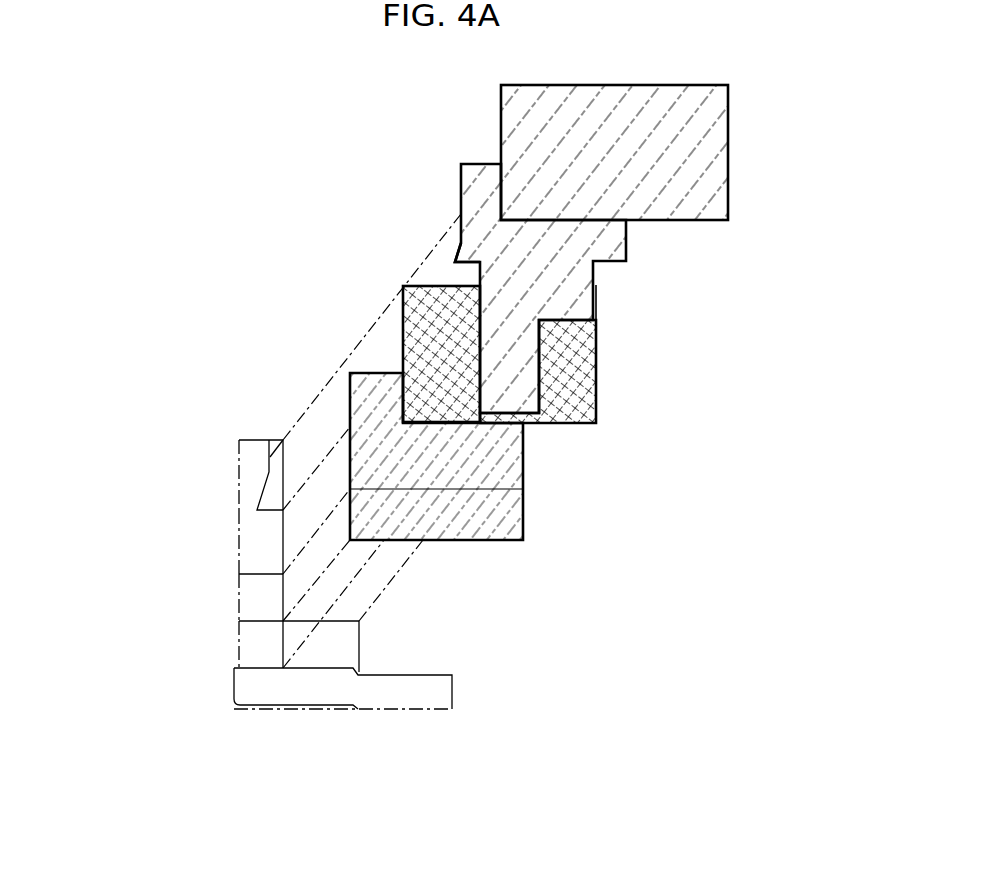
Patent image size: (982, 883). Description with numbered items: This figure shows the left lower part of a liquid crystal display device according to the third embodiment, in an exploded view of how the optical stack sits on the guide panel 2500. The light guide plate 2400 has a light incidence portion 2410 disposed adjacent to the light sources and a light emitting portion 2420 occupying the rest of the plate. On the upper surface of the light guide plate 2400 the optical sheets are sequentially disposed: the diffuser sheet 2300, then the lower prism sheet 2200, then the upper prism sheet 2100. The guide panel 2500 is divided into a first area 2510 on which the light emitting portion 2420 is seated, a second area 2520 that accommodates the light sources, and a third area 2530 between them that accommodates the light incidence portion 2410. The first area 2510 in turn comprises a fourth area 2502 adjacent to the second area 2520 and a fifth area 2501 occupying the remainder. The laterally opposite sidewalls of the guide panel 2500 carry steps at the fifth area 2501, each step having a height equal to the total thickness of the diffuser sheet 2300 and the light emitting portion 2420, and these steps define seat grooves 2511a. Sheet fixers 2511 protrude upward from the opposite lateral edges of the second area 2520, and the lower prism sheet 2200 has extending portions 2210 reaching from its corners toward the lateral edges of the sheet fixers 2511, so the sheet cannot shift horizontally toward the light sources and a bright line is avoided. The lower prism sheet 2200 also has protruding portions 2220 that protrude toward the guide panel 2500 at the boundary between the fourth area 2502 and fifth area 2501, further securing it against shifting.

The upper prism sheet 2100 is at (728, 160).
The lower prism sheet 2200 is at (627, 238).
The protruding portion 2220 is at (463, 245).
The extending portion 2210 is at (540, 340).
The diffuser sheet 2300 is at (590, 400).
The light guide plate 2400 is at (501, 456).
The light emitting portion 2420 is at (497, 474).
The light incidence portion 2410 is at (497, 523).
The guide panel 2500 is at (254, 585).
The first area 2510 is at (200, 507).
The fifth area 2501 is at (233, 440).
The fourth area 2502 is at (233, 511).
The third area 2530 is at (233, 575).
The second area 2520 is at (233, 623).
The sheet fixer 2511 is at (243, 707).
The seat groove 2511a is at (224, 454).